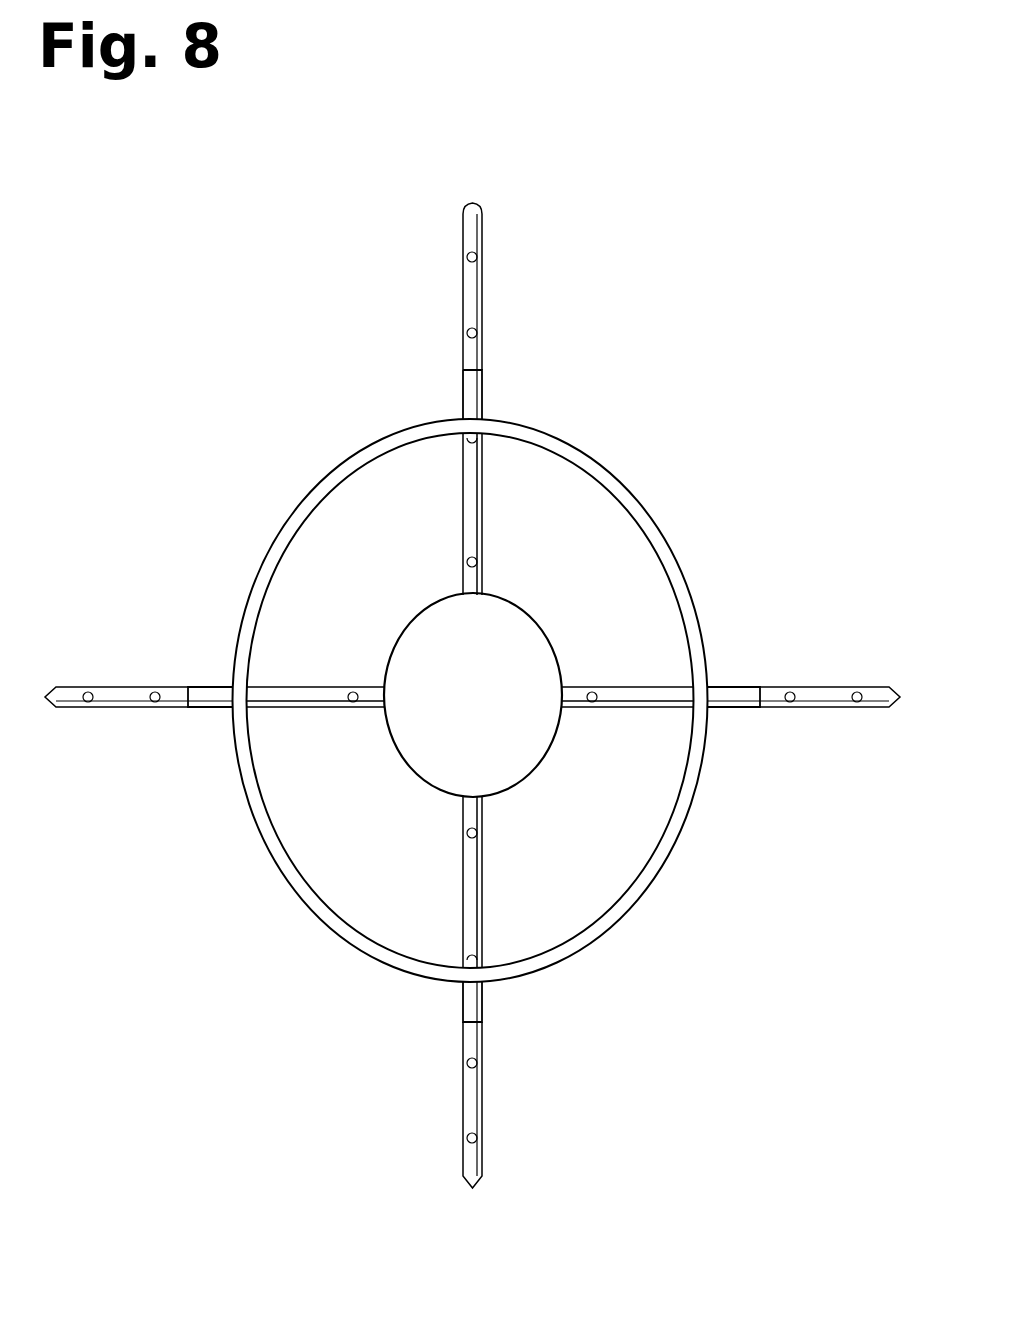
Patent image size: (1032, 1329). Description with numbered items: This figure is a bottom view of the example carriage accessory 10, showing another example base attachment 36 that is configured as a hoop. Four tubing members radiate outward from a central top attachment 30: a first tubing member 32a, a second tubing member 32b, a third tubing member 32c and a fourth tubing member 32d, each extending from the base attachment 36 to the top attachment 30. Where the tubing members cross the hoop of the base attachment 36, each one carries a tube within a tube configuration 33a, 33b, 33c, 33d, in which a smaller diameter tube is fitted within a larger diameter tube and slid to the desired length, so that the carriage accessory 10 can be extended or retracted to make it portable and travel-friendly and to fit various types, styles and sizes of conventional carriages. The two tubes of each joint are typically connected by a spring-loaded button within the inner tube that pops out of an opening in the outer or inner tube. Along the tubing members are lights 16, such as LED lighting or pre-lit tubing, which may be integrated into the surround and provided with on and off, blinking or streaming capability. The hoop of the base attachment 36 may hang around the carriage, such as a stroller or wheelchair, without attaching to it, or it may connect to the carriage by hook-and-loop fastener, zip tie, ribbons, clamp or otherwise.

The carriage accessory 10 is at (607, 323).
The lights 16 is at (463, 333).
The top attachment 30 is at (410, 622).
The first tubing member 32a is at (463, 258).
The second tubing member 32b is at (675, 687).
The third tubing member 32c is at (463, 938).
The fourth tubing member 32d is at (297, 690).
The tube within a tube configuration 33a is at (482, 370).
The tube within a tube configuration 33b is at (760, 707).
The tube within a tube configuration 33c is at (482, 1022).
The tube within a tube configuration 33d is at (188, 707).
The base attachment 36 is at (670, 852).